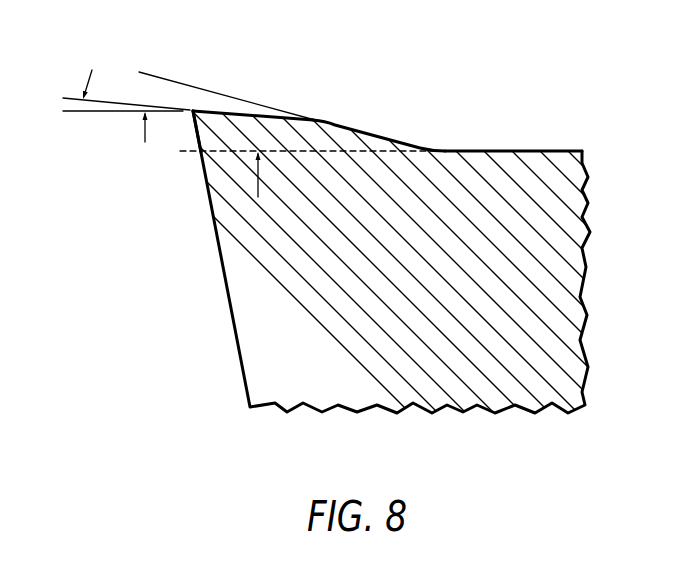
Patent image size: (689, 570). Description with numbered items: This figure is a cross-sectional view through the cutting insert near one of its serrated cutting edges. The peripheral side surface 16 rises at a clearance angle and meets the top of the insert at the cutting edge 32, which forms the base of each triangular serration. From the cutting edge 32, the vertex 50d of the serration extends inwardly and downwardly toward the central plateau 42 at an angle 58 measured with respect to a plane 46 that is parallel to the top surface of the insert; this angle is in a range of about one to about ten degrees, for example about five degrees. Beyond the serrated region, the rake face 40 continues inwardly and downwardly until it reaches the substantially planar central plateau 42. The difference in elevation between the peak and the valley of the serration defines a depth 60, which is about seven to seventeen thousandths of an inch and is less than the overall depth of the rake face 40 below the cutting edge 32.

The peripheral side surface 16 is at (198, 282).
The cutting edge 32 is at (192, 113).
The rake face 40 is at (372, 132).
The central plateau 42 is at (528, 150).
The plane parallel to the top surface 46 is at (153, 75).
The vertex 50d is at (217, 112).
The angle 58 is at (83, 114).
The depth 60 is at (258, 114).